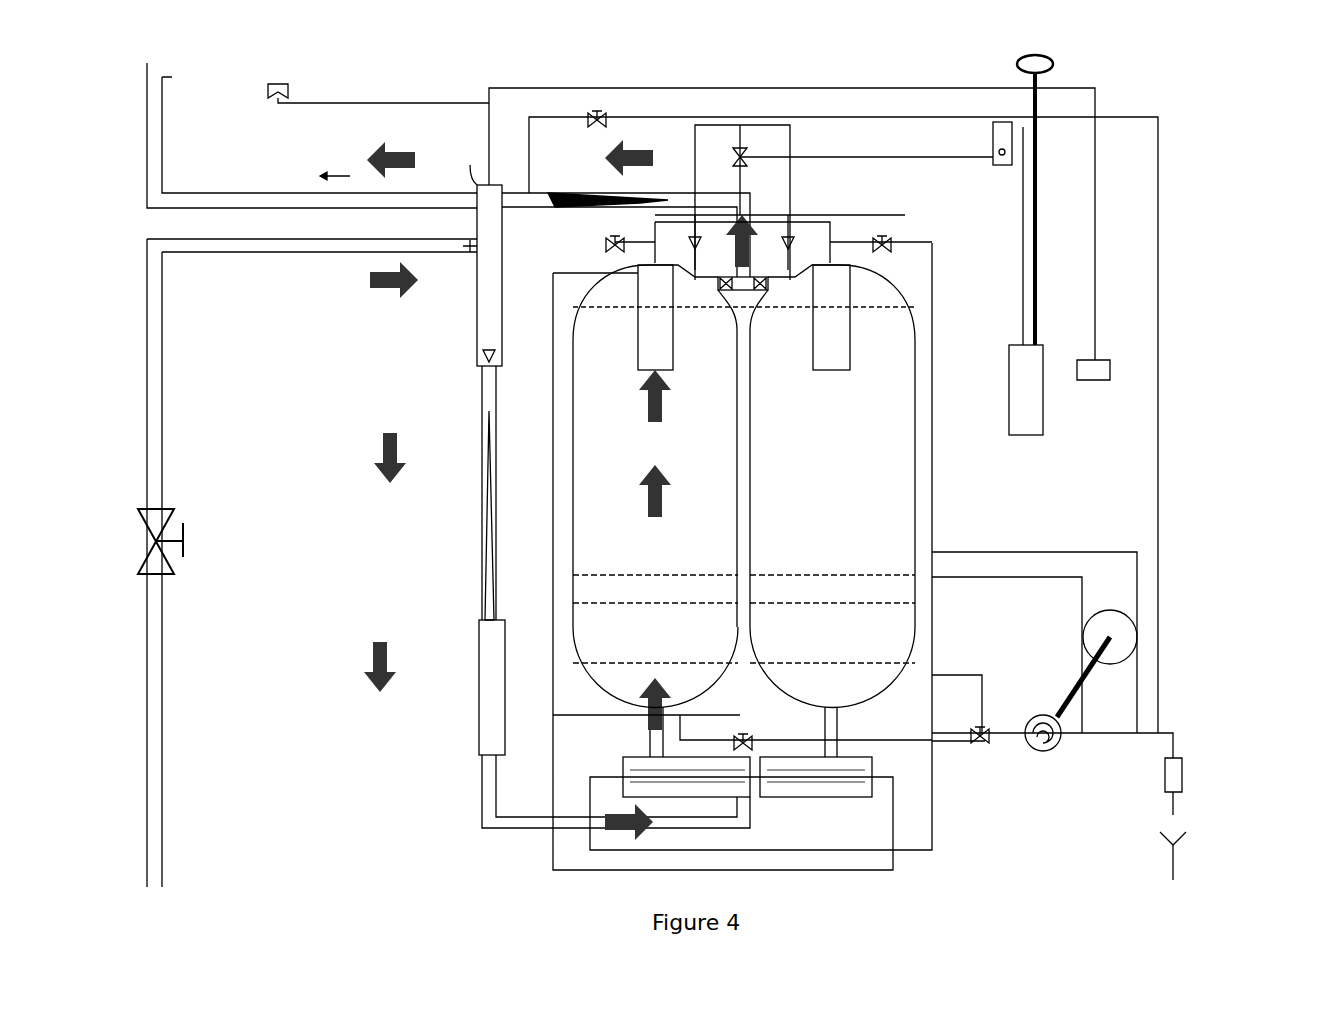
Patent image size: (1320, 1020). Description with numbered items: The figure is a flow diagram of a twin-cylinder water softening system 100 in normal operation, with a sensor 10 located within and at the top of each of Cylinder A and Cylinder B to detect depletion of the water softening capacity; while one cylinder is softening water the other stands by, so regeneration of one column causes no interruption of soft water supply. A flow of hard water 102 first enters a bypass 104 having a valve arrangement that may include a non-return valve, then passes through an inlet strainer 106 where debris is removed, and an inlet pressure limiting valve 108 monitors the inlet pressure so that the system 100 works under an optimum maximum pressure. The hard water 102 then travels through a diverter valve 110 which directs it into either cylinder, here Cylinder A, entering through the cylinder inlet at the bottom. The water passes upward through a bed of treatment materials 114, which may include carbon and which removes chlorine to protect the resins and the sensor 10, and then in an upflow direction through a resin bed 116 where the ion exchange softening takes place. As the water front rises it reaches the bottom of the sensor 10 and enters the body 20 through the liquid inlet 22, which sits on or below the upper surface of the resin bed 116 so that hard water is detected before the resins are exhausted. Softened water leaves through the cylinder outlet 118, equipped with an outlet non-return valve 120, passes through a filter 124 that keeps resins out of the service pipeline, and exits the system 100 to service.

The sensor 10 is at (650, 272).
The body 20 is at (633, 327).
The liquid inlet 22 is at (643, 372).
The water softening system 100 is at (1225, 241).
The hard water 102 is at (338, 312).
The bypass 104 is at (481, 322).
The inlet strainer 106 is at (487, 455).
The inlet pressure limiting valve 108 is at (487, 690).
The diverter valve 110 is at (757, 793).
The bed of treatment materials 114 is at (600, 630).
The resin bed 116 is at (607, 487).
The cylinder outlet 118 is at (710, 280).
The outlet non-return valve 120 is at (745, 270).
The filter 124 is at (570, 200).